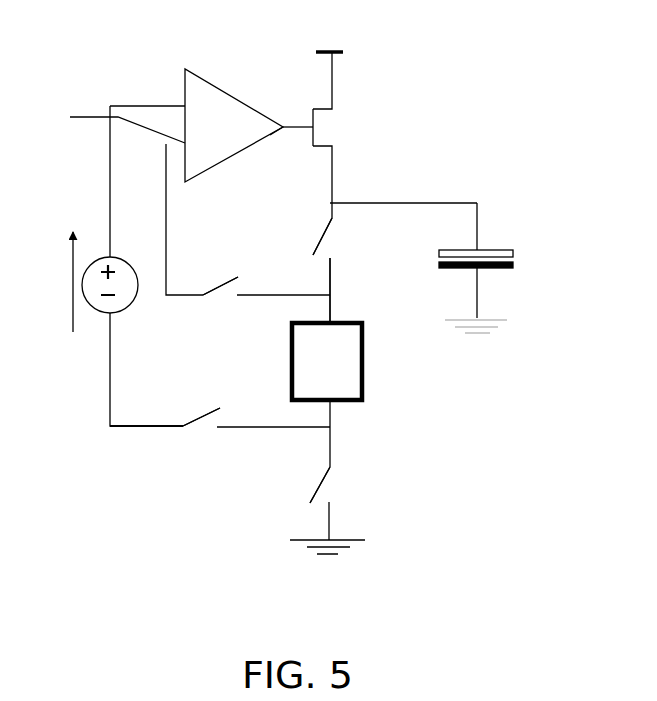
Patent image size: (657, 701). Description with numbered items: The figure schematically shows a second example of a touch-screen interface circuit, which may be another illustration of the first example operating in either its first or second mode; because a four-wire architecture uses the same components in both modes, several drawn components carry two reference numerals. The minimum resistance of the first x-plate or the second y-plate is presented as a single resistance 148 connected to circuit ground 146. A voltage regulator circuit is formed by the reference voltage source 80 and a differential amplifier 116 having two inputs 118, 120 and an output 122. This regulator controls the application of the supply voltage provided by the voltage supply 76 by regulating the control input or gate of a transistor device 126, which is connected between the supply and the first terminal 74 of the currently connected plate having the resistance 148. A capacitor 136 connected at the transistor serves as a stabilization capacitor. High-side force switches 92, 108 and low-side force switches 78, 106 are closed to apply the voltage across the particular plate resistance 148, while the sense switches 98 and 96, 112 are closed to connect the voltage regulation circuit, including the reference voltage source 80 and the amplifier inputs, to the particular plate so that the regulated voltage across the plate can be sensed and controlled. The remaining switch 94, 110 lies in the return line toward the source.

The first terminal 74 is at (333, 292).
The voltage supply 76 is at (332, 52).
The low-side force switch 78 is at (331, 432).
The reference voltage source 80 is at (123, 298).
The high-side force switch 92 is at (316, 233).
The second switch 94 is at (308, 488).
The sense switch 96 is at (206, 283).
The sense switch 98 is at (190, 431).
The low-side force switch 106 is at (320, 485).
The high-side force switch 108 is at (322, 236).
The discharging switch 110 is at (201, 417).
The sense switch 112 is at (220, 286).
The differential amplifier 116 is at (218, 112).
The input 118 is at (183, 103).
The input 120 is at (109, 126).
The amplifier output 122 is at (282, 130).
The transistor device 126 is at (334, 123).
The capacitor 136 is at (482, 250).
The circuit ground 146 is at (350, 538).
The resistance 148 is at (350, 387).